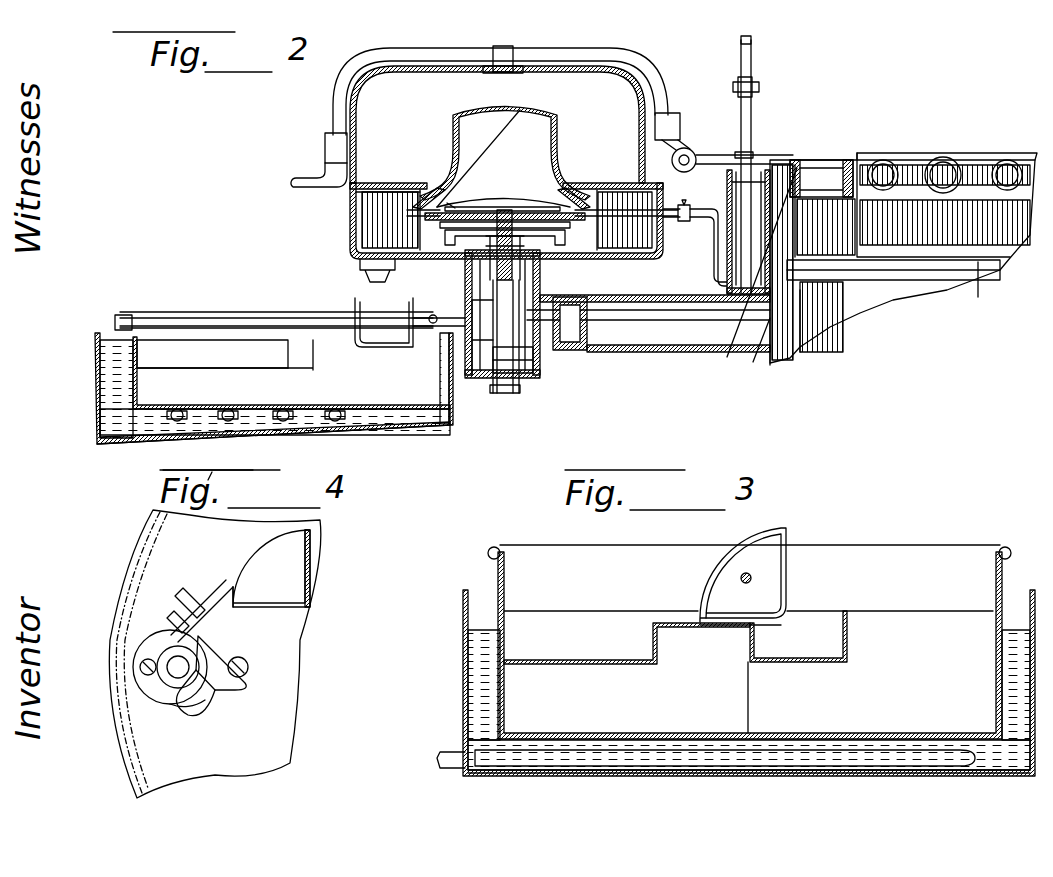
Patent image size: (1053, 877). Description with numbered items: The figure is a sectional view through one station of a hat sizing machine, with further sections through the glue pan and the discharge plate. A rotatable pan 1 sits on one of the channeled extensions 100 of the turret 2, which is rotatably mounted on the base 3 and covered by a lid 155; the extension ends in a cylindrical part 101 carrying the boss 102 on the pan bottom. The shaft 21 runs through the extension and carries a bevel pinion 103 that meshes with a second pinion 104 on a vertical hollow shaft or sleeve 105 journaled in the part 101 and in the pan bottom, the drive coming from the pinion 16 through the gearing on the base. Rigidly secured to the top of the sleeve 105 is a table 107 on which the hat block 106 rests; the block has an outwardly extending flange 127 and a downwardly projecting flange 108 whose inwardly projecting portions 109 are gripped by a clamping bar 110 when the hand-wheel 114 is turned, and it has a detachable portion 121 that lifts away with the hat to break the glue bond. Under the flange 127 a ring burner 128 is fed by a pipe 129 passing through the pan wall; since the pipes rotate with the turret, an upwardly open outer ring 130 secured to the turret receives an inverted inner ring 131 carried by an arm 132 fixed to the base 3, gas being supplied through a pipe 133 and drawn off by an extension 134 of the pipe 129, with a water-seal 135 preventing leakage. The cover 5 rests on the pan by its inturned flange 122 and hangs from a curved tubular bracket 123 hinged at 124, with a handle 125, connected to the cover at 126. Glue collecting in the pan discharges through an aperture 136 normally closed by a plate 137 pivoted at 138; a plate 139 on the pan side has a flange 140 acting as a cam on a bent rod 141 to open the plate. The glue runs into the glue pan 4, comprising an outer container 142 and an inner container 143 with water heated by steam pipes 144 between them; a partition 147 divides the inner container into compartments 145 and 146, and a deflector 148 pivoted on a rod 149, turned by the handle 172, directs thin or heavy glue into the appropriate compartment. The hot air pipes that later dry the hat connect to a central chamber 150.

In FIG. 2, the rotatable pan 1 is at (352, 207).
In FIG. 4, the rotatable pan 1 is at (250, 683).
In FIG. 2, the turret 2 is at (823, 320).
In FIG. 2, the base 3 is at (380, 292).
In FIG. 2, the glue pan 4 is at (97, 392).
In FIG. 3, the glue pan 4 is at (463, 698).
In FIG. 2, the cover 5 is at (638, 72).
In FIG. 2, the pinion 16 is at (610, 206).
In FIG. 2, the shaft 21 is at (632, 326).
In FIG. 2, the channeled extension 100 is at (621, 289).
In FIG. 2, the cylindrical part 101 is at (460, 347).
In FIG. 2, the boss 102 is at (541, 272).
In FIG. 2, the bevel pinion 103 is at (596, 330).
In FIG. 2, the second pinion 104 is at (534, 375).
In FIG. 2, the vertical hollow shaft or sleeve 105 is at (497, 318).
In FIG. 2, the hat block 106 is at (558, 162).
In FIG. 2, the table 107 is at (562, 230).
In FIG. 2, the downwardly projecting flange 108 is at (507, 205).
In FIG. 2, the inwardly projecting portions 109 is at (450, 207).
In FIG. 2, the clamping bar 110 is at (490, 201).
In FIG. 2, the hand-wheel 114 is at (513, 394).
In FIG. 2, the detachable portion 121 is at (470, 113).
In FIG. 2, the inturned flange 122 is at (384, 167).
In FIG. 2, the curved tubular bracket 123 is at (430, 45).
In FIG. 2, the hinge 124 is at (692, 153).
In FIG. 2, the handle 125 is at (293, 176).
In FIG. 2, the bracket connections 126 is at (508, 58).
In FIG. 2, the outwardly extending flange 127 is at (586, 193).
In FIG. 2, the ring burner 128 is at (417, 216).
In FIG. 2, the gas pipe 129 is at (716, 241).
In FIG. 2, the outer channeled ring 130 is at (740, 191).
In FIG. 2, the inner channeled ring 131 is at (748, 210).
In FIG. 2, the arm 132 is at (718, 157).
In FIG. 2, the gas pipe 133 is at (752, 114).
In FIG. 2, the extension 134 is at (808, 164).
In FIG. 2, the water-seal 135 is at (750, 363).
In FIG. 2, the aperture 136 is at (352, 258).
In FIG. 4, the aperture 136 is at (176, 668).
In FIG. 4, the plate 137 is at (222, 697).
In FIG. 4, the pivot 138 is at (240, 668).
In FIG. 2, the plate 139 is at (448, 320).
In FIG. 4, the plate 139 is at (310, 575).
In FIG. 4, the flange (cam) 140 is at (262, 558).
In FIG. 4, the bent rod 141 is at (224, 585).
In FIG. 2, the outer container 142 is at (165, 443).
In FIG. 3, the outer container 142 is at (686, 777).
In FIG. 2, the inner container 143 is at (139, 388).
In FIG. 3, the inner container 143 is at (775, 732).
In FIG. 2, the steam pipes 144 is at (227, 408).
In FIG. 3, the steam pipes 144 is at (613, 768).
In FIG. 3, the compartment 145 is at (717, 635).
In FIG. 3, the compartment 146 is at (798, 636).
In FIG. 2, the partition 147 is at (262, 389).
In FIG. 3, the partition 147 is at (735, 630).
In FIG. 2, the deflector 148 is at (300, 310).
In FIG. 3, the deflector 148 is at (788, 530).
In FIG. 2, the rod 149 is at (173, 322).
In FIG. 3, the rod 149 is at (748, 567).
In FIG. 2, the central chamber 150 is at (903, 258).
In FIG. 2, the lid 155 is at (975, 290).
In FIG. 2, the handle 172 is at (124, 315).